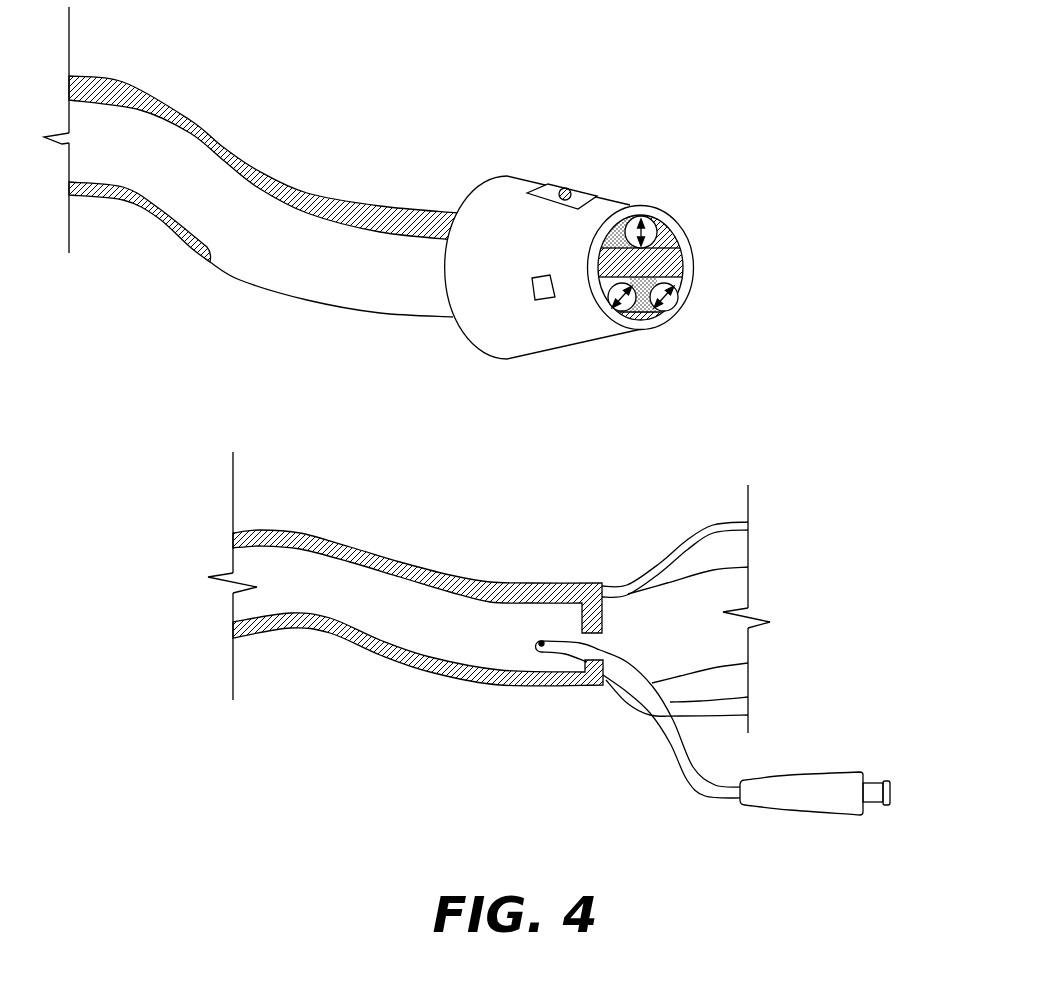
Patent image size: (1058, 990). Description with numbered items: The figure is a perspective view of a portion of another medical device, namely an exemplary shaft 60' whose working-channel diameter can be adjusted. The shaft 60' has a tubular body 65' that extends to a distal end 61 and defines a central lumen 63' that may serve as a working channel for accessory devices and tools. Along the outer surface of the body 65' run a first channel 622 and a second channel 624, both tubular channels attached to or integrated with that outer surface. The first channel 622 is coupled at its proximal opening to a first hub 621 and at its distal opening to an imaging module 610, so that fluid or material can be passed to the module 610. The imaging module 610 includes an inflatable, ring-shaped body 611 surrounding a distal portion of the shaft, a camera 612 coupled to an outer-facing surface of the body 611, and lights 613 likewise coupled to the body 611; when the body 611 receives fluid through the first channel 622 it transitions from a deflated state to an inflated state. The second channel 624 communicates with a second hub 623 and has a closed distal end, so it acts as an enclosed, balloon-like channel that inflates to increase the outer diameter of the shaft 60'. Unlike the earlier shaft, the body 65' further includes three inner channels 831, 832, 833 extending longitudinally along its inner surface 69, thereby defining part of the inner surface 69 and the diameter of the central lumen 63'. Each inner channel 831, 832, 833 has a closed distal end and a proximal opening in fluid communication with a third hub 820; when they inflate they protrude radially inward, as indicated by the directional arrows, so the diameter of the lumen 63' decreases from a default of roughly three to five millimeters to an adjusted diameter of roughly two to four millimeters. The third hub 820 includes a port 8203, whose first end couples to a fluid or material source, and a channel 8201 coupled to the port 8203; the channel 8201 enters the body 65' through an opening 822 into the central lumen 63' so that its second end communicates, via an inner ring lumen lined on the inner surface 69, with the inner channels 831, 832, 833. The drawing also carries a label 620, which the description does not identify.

The shaft 60' is at (407, 370).
The first channel 622 is at (213, 123).
The second channel 624 is at (147, 211).
The body 65' is at (331, 483).
The imaging module 610 is at (677, 203).
The inflatable body 611 is at (588, 340).
The camera 612 is at (590, 196).
The lights 613 is at (543, 300).
The inner surface 69 is at (620, 205).
The distal end 61 is at (697, 238).
The central lumen 63' is at (675, 271).
The inner channel 831 is at (660, 228).
The inner channel 832 is at (640, 322).
The inner channel 833 is at (660, 310).
The connecting flange 620 is at (595, 575).
The first hub 621 is at (688, 527).
The second hub 623 is at (640, 717).
The opening 822 is at (541, 655).
The third hub 820 is at (731, 800).
The channel 8201 is at (697, 760).
The port 8203 is at (893, 792).